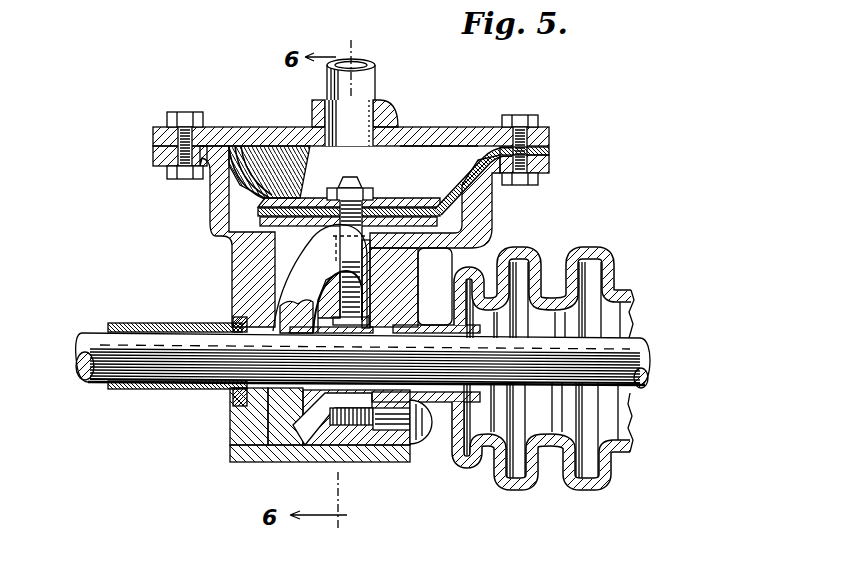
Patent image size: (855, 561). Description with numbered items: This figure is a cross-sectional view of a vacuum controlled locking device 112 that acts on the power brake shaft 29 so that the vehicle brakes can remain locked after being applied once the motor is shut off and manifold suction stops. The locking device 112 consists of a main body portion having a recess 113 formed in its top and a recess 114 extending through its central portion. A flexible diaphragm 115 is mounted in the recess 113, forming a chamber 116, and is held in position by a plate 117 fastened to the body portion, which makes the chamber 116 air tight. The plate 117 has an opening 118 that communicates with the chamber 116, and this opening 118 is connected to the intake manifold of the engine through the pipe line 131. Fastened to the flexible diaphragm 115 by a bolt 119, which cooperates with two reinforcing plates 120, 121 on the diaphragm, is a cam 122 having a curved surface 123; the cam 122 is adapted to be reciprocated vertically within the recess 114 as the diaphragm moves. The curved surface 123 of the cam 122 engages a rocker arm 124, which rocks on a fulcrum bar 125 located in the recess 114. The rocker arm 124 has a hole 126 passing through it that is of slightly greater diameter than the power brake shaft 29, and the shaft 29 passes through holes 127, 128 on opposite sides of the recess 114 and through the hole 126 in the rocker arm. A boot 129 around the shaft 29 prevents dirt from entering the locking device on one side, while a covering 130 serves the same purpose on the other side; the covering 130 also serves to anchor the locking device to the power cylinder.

The power brake shaft 29 is at (92, 338).
The vacuum locking device 112 is at (486, 122).
The recess 113 is at (465, 207).
The recess 114 is at (280, 247).
The flexible diaphragm 115 is at (457, 178).
The chamber 116 is at (427, 155).
The plate 117 is at (256, 126).
The opening 118 is at (368, 102).
The bolt 119 is at (355, 186).
The reinforcing plate 120 is at (305, 196).
The reinforcing plate 121 is at (250, 211).
The cam 122 is at (363, 290).
The curved surface 123 is at (367, 262).
The rocker arm 124 is at (297, 270).
The fulcrum bar 125 is at (308, 447).
The hole 126 is at (285, 330).
The hole 127 is at (380, 333).
The hole 128 is at (241, 400).
The boot 129 is at (514, 490).
The covering 130 is at (157, 392).
The pipe line 131 is at (327, 77).